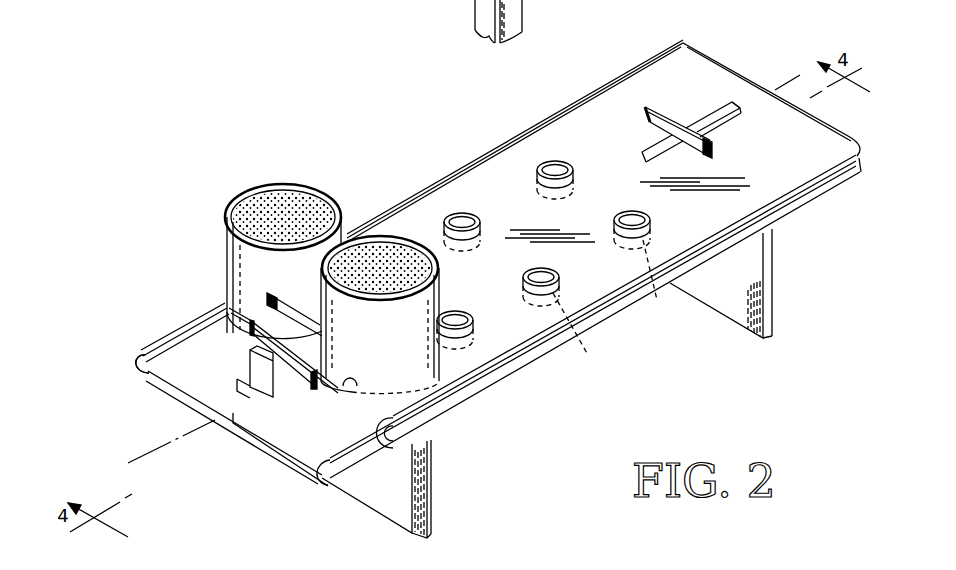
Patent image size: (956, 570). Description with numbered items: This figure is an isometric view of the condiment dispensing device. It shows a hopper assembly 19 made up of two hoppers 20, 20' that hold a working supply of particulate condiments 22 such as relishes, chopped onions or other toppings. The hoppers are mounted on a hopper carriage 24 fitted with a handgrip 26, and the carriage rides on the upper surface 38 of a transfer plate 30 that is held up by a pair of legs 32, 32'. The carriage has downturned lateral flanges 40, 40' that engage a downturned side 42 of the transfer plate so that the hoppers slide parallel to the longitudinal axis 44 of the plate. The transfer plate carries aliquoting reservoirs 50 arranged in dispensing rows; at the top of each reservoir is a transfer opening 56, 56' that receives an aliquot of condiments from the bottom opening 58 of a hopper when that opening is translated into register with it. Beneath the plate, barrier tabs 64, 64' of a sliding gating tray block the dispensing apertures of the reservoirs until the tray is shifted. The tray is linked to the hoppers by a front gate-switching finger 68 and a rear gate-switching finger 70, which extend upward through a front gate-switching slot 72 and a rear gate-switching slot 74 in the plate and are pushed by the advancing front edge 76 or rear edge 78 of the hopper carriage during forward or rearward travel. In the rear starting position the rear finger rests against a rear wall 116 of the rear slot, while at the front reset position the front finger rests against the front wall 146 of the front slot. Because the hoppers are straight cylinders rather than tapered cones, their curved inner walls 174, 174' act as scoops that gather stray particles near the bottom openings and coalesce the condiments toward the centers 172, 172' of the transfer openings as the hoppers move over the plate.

The hopper assembly 19 is at (355, 212).
The hopper 20 is at (260, 278).
The hopper 20' is at (400, 319).
The particulate condiments 22 is at (300, 205).
The hopper carriage 24 is at (455, 380).
The handgrip 26 is at (273, 297).
The transfer plate 30 is at (596, 120).
The leg 32 is at (408, 489).
The leg 32' is at (753, 283).
The upper surface of the transfer plate 38 is at (750, 182).
The downturned lateral flange 40 is at (409, 206).
The downturned lateral flange 40' is at (595, 316).
The downturned side of the transfer plate 42 is at (138, 360).
The longitudinal axis 44 is at (178, 440).
The aliquoting reservoir 50 is at (462, 314).
The transfer opening 56 is at (524, 269).
The transfer opening 56' is at (625, 198).
The bottom opening 58 is at (345, 398).
The barrier tab 64 is at (582, 334).
The barrier tab 64' is at (666, 286).
The front gate-switching finger 68 is at (668, 118).
The rear gate-switching finger 70 is at (252, 357).
The front gate-switching slot 72 is at (732, 124).
The rear gate-switching slot 74 is at (265, 388).
The front edge of the hopper carriage 76 is at (468, 343).
The rear edge of the hopper carriage 78 is at (384, 452).
The rear wall of the rear gate-switching slot 116 is at (232, 386).
The front wall of the front gate-switching slot 146 is at (735, 100).
The center of the transfer opening 172 is at (568, 275).
The center of the transfer opening 172' is at (663, 224).
The curved inner wall of the hopper 174 is at (260, 208).
The curved inner wall of the hopper 174' is at (380, 234).